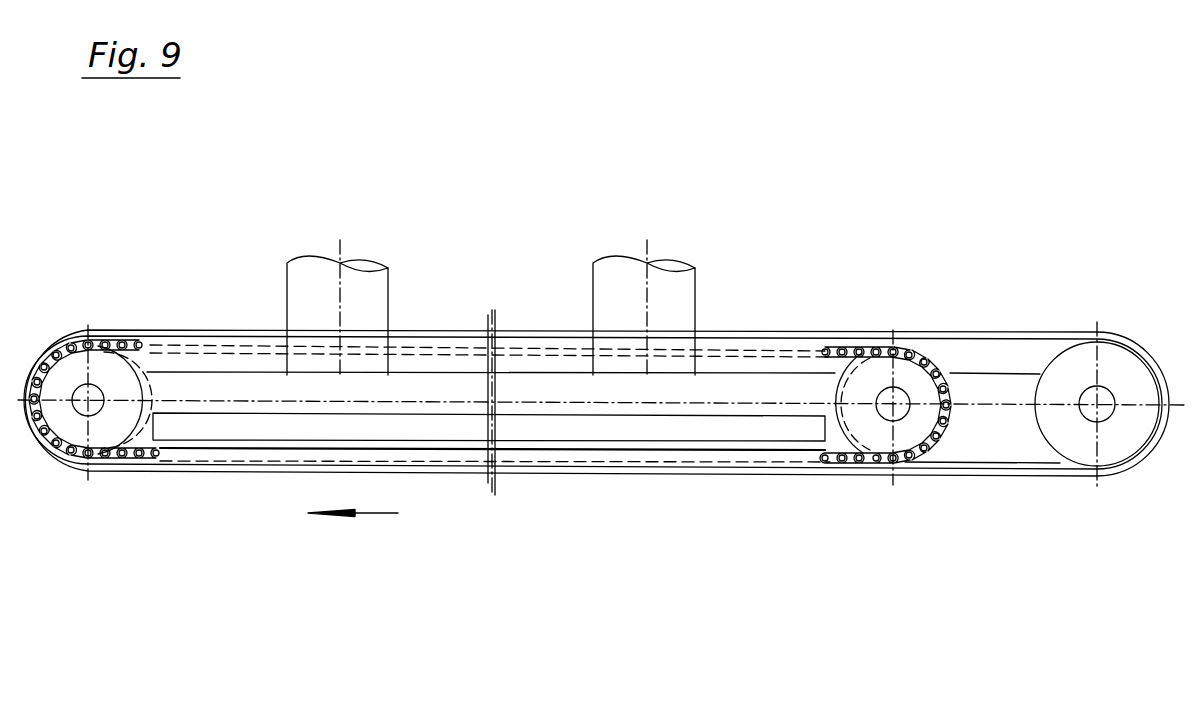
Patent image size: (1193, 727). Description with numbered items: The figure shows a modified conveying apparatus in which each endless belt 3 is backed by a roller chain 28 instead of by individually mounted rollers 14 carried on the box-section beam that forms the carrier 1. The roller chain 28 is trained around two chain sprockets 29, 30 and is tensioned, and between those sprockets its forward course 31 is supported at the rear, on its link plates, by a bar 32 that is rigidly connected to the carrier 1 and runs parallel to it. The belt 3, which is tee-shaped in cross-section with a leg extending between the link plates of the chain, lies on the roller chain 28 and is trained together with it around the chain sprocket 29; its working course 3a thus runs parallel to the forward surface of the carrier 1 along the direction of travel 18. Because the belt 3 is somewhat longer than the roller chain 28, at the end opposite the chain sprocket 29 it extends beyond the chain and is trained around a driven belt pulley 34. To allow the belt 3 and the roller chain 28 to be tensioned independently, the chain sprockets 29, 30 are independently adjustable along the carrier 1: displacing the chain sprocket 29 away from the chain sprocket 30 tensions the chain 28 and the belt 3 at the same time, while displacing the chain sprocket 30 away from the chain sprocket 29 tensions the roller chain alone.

The carrier 1 is at (803, 388).
The endless belt 3 is at (972, 340).
The working course 3a is at (617, 468).
The rollers 14 is at (880, 341).
The direction of travel 18 is at (373, 513).
The roller chain 28 is at (110, 453).
The chain sprocket 29 is at (103, 367).
The chain sprocket 30 is at (920, 440).
The forward course of the chain 31 is at (852, 458).
The bar 32 is at (747, 445).
The driven belt pulley 34 is at (1067, 440).